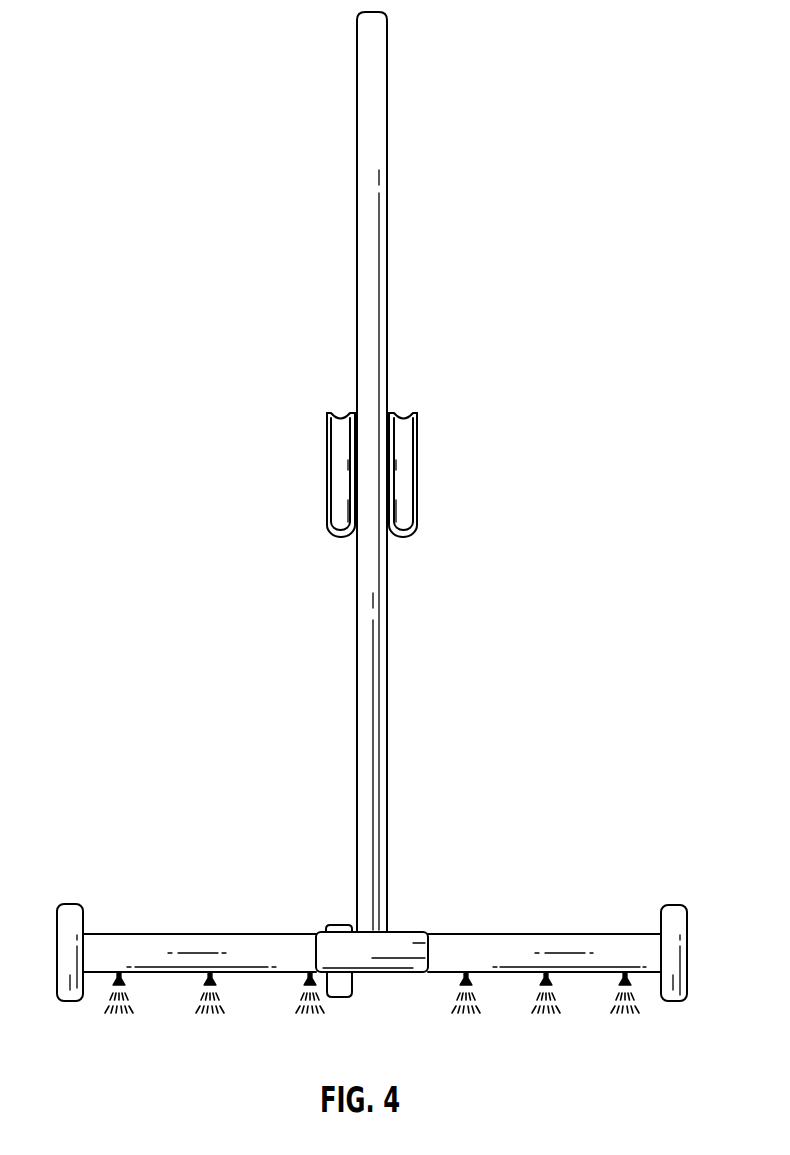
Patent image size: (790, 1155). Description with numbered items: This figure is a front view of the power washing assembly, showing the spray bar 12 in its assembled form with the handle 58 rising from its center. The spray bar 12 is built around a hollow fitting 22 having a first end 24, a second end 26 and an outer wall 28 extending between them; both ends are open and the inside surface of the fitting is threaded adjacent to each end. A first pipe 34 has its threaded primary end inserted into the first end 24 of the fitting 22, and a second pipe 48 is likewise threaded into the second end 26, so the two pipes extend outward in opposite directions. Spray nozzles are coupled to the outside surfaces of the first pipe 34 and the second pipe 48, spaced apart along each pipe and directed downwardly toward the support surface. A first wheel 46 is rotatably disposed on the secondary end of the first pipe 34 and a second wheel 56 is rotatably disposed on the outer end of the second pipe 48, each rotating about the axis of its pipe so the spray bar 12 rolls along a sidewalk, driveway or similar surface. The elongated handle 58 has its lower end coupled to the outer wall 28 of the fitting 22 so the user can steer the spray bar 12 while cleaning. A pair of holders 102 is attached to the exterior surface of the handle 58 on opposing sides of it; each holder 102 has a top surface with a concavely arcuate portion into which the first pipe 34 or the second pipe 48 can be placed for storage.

The spray bar 12 is at (557, 896).
The fitting 22 is at (397, 928).
The first end 24 is at (316, 948).
The second end 26 is at (430, 948).
The outer wall 28 is at (362, 948).
The first pipe 34 is at (205, 934).
The first wheel 46 is at (70, 904).
The second pipe 48 is at (603, 934).
The second wheel 56 is at (673, 905).
The handle 58 is at (355, 183).
The holders 102 is at (327, 463).